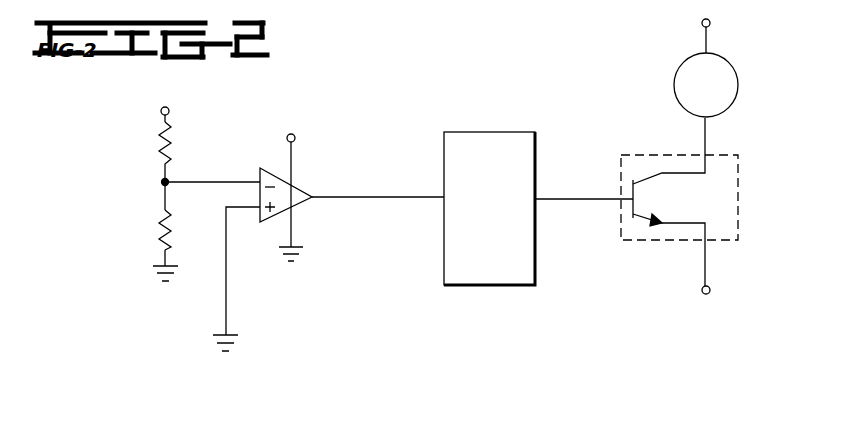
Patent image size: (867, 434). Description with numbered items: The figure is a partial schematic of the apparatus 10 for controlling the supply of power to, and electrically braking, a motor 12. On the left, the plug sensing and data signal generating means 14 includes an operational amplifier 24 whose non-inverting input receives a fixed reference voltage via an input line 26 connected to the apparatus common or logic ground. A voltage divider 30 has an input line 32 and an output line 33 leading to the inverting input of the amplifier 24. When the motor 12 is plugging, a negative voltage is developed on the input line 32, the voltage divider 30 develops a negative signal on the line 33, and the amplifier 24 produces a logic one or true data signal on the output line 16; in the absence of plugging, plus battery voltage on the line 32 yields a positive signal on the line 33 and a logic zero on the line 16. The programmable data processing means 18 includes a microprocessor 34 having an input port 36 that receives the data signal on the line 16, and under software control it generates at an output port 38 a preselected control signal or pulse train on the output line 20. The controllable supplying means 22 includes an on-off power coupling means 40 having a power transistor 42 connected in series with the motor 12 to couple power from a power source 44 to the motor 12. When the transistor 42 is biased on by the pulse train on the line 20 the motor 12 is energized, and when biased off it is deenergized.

The apparatus 10 is at (412, 72).
The motor 12 is at (741, 52).
The plug sensing and data signal generating means 14 is at (245, 116).
The output line 16 is at (360, 196).
The programmable data processing means 18 is at (483, 112).
The output line 20 is at (575, 198).
The controllable supplying means 22 is at (658, 142).
The operational amplifier 24 is at (297, 205).
The input line 26 is at (226, 298).
The voltage divider 30 is at (142, 184).
The input line 32 is at (167, 122).
The output line 33 is at (207, 182).
The microprocessor 34 is at (517, 132).
The input port 36 is at (442, 196).
The output port 38 is at (537, 202).
The on-off power coupling means 40 is at (650, 242).
The power transistor 42 is at (655, 147).
The power source 44 is at (712, 22).